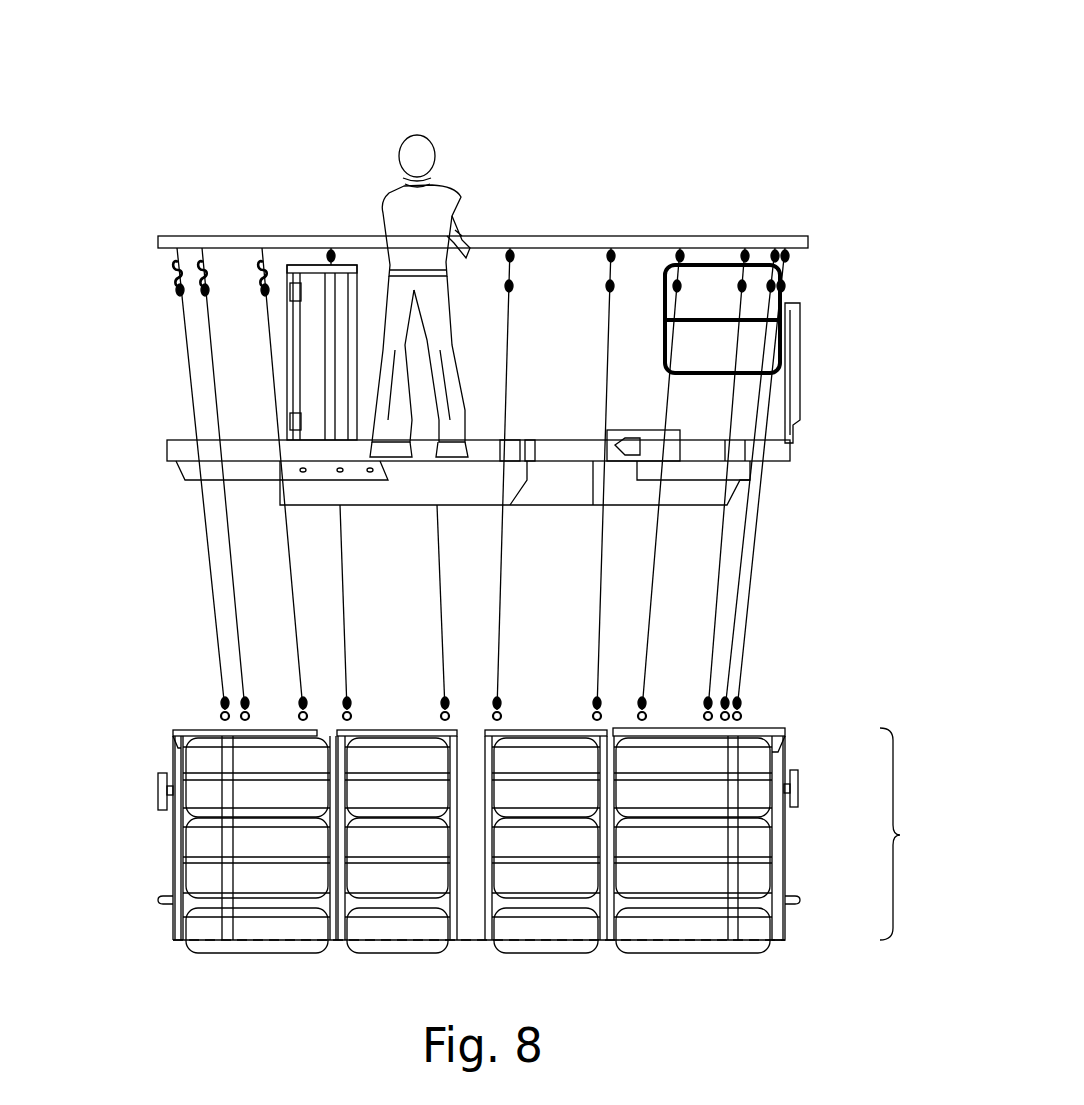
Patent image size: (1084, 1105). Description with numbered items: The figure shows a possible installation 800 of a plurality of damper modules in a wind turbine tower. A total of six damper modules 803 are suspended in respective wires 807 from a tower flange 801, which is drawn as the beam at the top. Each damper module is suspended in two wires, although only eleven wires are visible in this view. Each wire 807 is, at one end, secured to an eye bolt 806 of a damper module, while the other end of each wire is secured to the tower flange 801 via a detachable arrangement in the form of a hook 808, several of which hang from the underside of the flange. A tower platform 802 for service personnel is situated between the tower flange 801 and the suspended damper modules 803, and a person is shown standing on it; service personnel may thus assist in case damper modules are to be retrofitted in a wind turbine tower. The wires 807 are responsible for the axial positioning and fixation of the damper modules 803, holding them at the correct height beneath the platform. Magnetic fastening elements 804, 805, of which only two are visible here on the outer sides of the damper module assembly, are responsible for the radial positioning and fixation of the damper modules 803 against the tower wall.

The installation 800 is at (740, 73).
The tower flange 801 is at (712, 243).
The tower platform 802 is at (167, 479).
The damper modules 803 is at (563, 840).
The magnetic fastening element 804 is at (800, 790).
The magnetic fastening element 805 is at (158, 790).
The eye bolt 806 is at (220, 716).
The wires 807 is at (208, 565).
The hook 808 is at (172, 270).